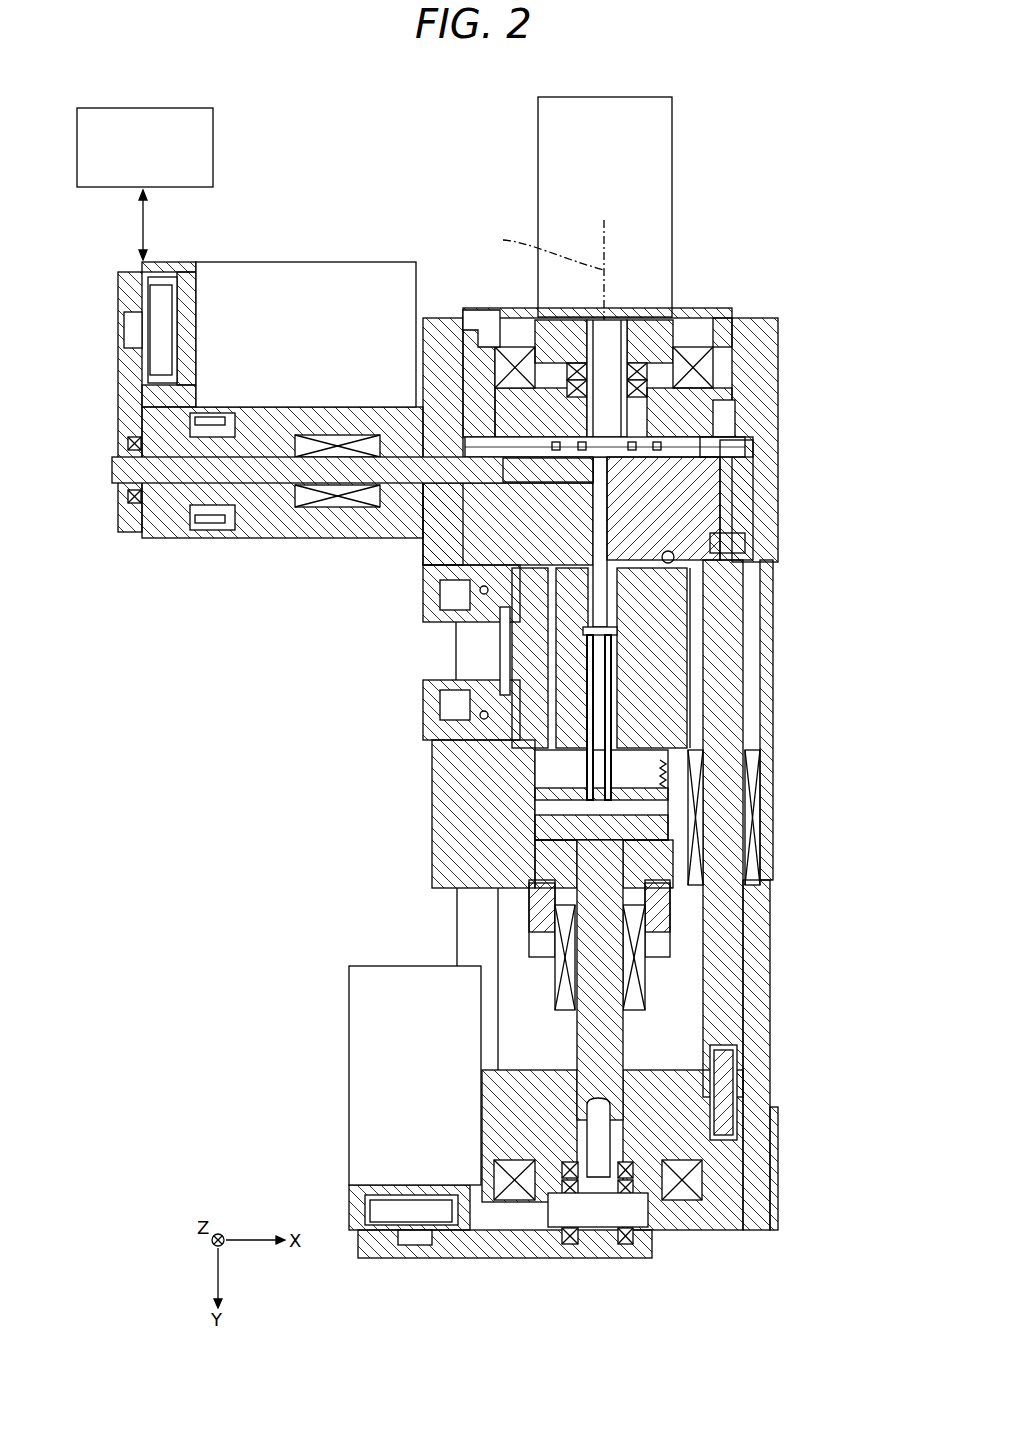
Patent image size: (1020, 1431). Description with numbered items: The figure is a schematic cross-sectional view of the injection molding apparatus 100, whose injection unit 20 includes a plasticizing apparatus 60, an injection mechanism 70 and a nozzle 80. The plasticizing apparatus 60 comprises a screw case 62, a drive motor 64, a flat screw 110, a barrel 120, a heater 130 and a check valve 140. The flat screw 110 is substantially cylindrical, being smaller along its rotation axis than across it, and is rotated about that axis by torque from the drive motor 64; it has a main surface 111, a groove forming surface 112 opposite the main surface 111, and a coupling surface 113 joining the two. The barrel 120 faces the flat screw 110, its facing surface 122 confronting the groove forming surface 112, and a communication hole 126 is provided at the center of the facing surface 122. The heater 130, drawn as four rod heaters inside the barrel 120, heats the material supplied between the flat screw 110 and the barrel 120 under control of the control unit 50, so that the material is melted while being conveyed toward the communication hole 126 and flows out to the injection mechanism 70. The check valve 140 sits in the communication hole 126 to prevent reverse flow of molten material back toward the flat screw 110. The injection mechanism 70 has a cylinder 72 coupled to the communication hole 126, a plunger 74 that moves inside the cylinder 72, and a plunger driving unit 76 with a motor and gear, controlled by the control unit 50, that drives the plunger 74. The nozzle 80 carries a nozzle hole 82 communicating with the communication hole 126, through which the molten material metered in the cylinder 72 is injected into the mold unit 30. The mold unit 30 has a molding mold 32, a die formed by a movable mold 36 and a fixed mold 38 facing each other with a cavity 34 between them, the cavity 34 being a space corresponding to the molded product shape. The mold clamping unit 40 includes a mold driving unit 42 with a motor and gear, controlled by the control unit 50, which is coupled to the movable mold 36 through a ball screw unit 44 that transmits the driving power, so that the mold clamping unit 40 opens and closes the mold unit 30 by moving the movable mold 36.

The injection molding apparatus 100 is at (778, 152).
The injection unit 20 is at (830, 262).
The mold unit 30 is at (362, 700).
The molding mold 32 is at (372, 633).
The cavity 34 is at (617, 660).
The movable mold 36 is at (537, 655).
The fixed mold 38 is at (537, 630).
The mold clamping unit 40 is at (352, 949).
The mold driving unit 42 is at (388, 1064).
The ball screw unit 44 is at (605, 1033).
The control unit 50 is at (183, 156).
The plasticizing apparatus 60 is at (776, 294).
The screw case 62 is at (748, 348).
The drive motor 64 is at (562, 186).
The injection mechanism 70 is at (235, 560).
The cylinder 72 is at (548, 474).
The plunger 74 is at (273, 474).
The plunger driving unit 76 is at (309, 297).
The nozzle 80 is at (690, 613).
The nozzle hole 82 is at (690, 584).
The flat screw 110 is at (697, 405).
The main surface 111 is at (682, 380).
The groove forming surface 112 is at (750, 445).
The coupling surface 113 is at (498, 327).
The barrel 120 is at (687, 472).
The facing surface 122 is at (723, 425).
The communication hole 126 is at (730, 536).
The heater 130 is at (763, 484).
The check valve 140 is at (545, 330).